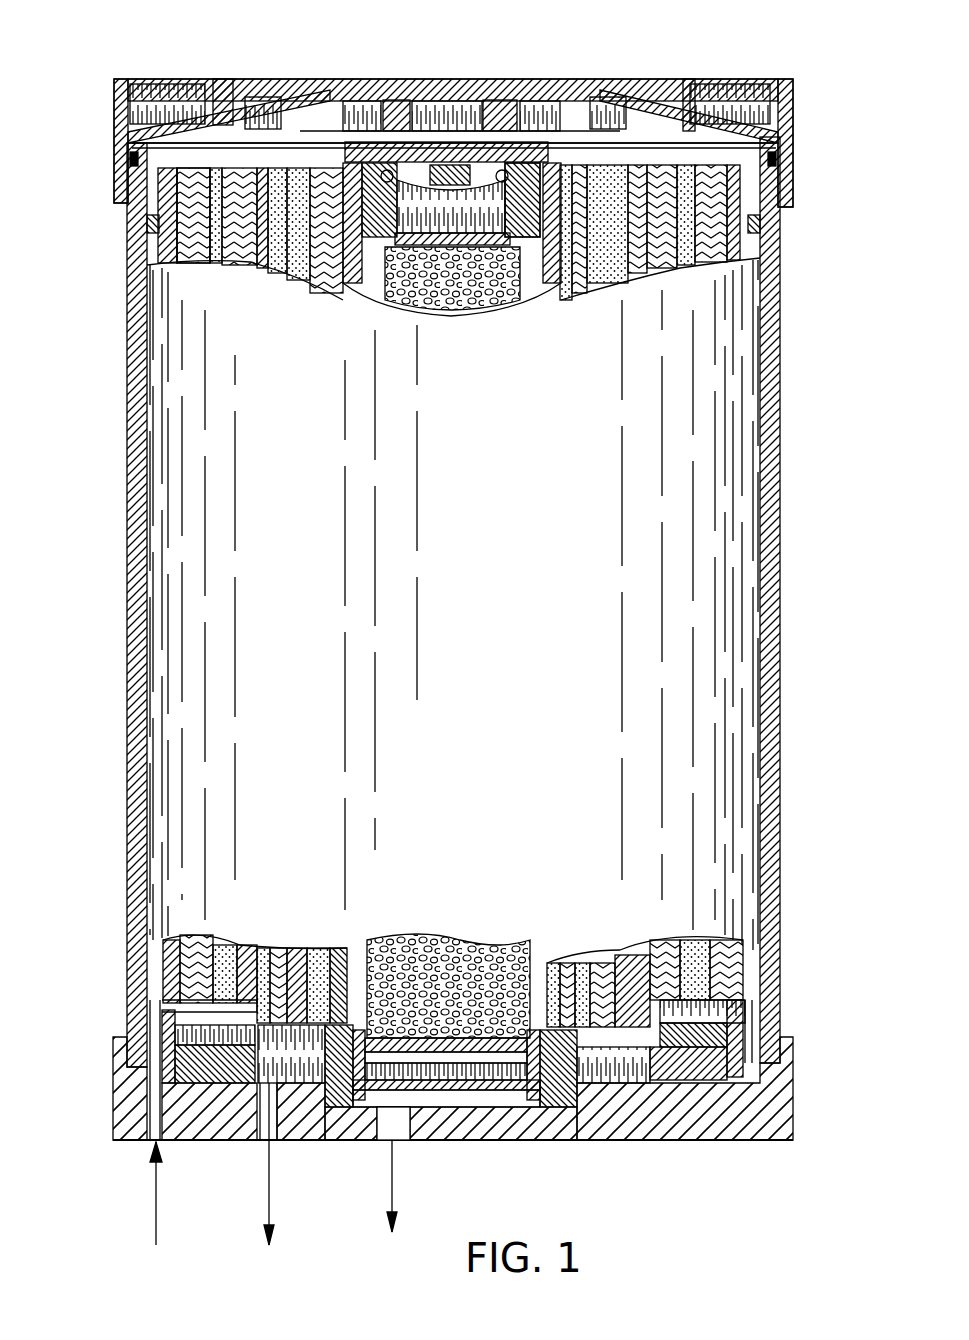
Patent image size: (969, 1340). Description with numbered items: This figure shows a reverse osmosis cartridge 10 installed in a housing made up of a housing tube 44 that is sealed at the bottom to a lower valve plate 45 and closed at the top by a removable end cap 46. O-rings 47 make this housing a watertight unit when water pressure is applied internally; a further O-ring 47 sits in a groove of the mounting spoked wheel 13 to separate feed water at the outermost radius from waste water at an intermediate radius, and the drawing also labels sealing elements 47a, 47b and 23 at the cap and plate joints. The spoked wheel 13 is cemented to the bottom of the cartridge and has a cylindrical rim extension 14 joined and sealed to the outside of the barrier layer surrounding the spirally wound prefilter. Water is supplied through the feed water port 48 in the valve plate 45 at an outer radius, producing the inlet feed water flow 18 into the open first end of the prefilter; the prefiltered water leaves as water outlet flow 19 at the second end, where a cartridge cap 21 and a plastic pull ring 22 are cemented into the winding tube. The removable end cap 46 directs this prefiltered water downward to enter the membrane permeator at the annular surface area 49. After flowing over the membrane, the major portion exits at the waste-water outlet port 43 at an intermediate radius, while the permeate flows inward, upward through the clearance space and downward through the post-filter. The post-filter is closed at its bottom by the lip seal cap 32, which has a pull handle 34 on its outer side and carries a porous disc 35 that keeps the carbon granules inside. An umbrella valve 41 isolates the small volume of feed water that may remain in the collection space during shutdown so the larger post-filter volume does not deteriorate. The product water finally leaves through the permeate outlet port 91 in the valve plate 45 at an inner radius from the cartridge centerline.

The reverse osmosis cartridge 10 is at (700, 483).
The mounting spoked wheel 13 is at (645, 1112).
The cylindrical rim extension 14 is at (745, 968).
The inlet feed water flow 18 is at (150, 1045).
The water outlet flow 19 is at (190, 168).
The cartridge cap 21 is at (540, 155).
The plastic pull ring 22 is at (600, 162).
The seal ring 23 is at (122, 222).
The lip seal cap 32 is at (405, 1075).
The pull handle 34 is at (480, 1075).
The porous disc 35 is at (470, 1100).
The umbrella valve 41 is at (430, 160).
The waste-water outlet port 43 is at (280, 1200).
The housing tube 44 is at (122, 400).
The lower valve plate 45 is at (115, 1105).
The removable end cap 46 is at (118, 112).
The O-ring 47 is at (740, 1065).
The fitting port 47a is at (632, 1077).
The gasket 47b is at (128, 158).
The feed water port 48 is at (150, 1210).
The annular surface area 49 is at (300, 165).
The permeate outlet port 91 is at (400, 1200).